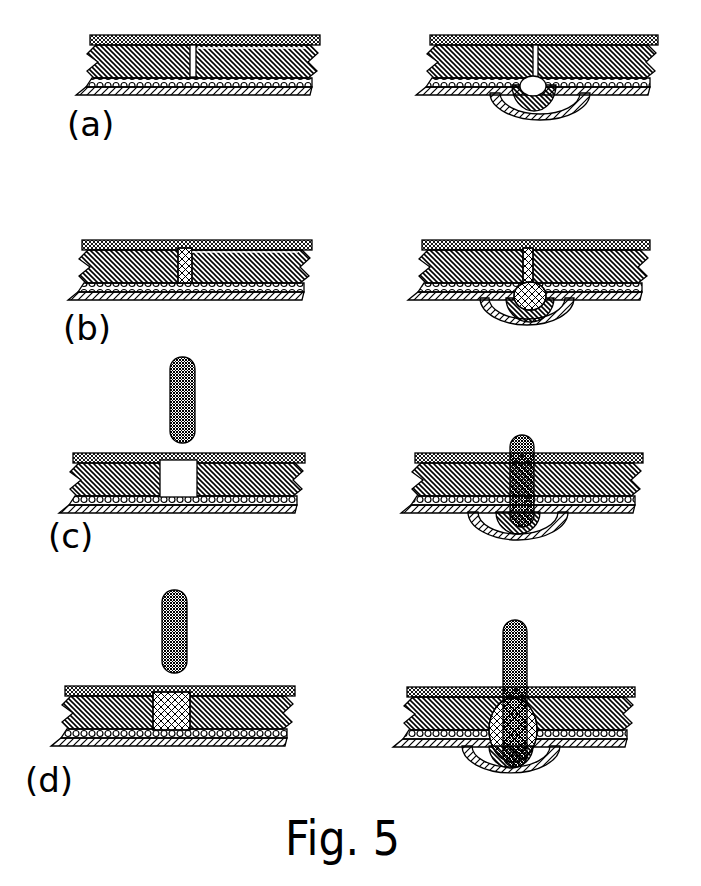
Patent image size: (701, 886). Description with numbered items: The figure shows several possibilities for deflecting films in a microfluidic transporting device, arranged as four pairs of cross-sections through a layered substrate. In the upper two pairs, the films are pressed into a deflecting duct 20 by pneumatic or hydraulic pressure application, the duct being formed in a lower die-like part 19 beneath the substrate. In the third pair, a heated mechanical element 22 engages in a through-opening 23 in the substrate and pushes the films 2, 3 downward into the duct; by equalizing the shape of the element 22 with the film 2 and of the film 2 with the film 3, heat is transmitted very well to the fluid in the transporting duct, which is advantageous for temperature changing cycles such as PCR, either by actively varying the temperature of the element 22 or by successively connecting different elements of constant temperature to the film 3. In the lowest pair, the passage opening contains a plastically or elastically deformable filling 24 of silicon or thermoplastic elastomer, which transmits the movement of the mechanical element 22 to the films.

The film 2 is at (500, 513).
The film 3 is at (553, 530).
The counter die 19 is at (563, 98).
The deflecting duct 20 is at (520, 102).
The mechanical element 22 is at (196, 395).
The through-opening 23 is at (185, 467).
The deformable filling 24 is at (165, 708).